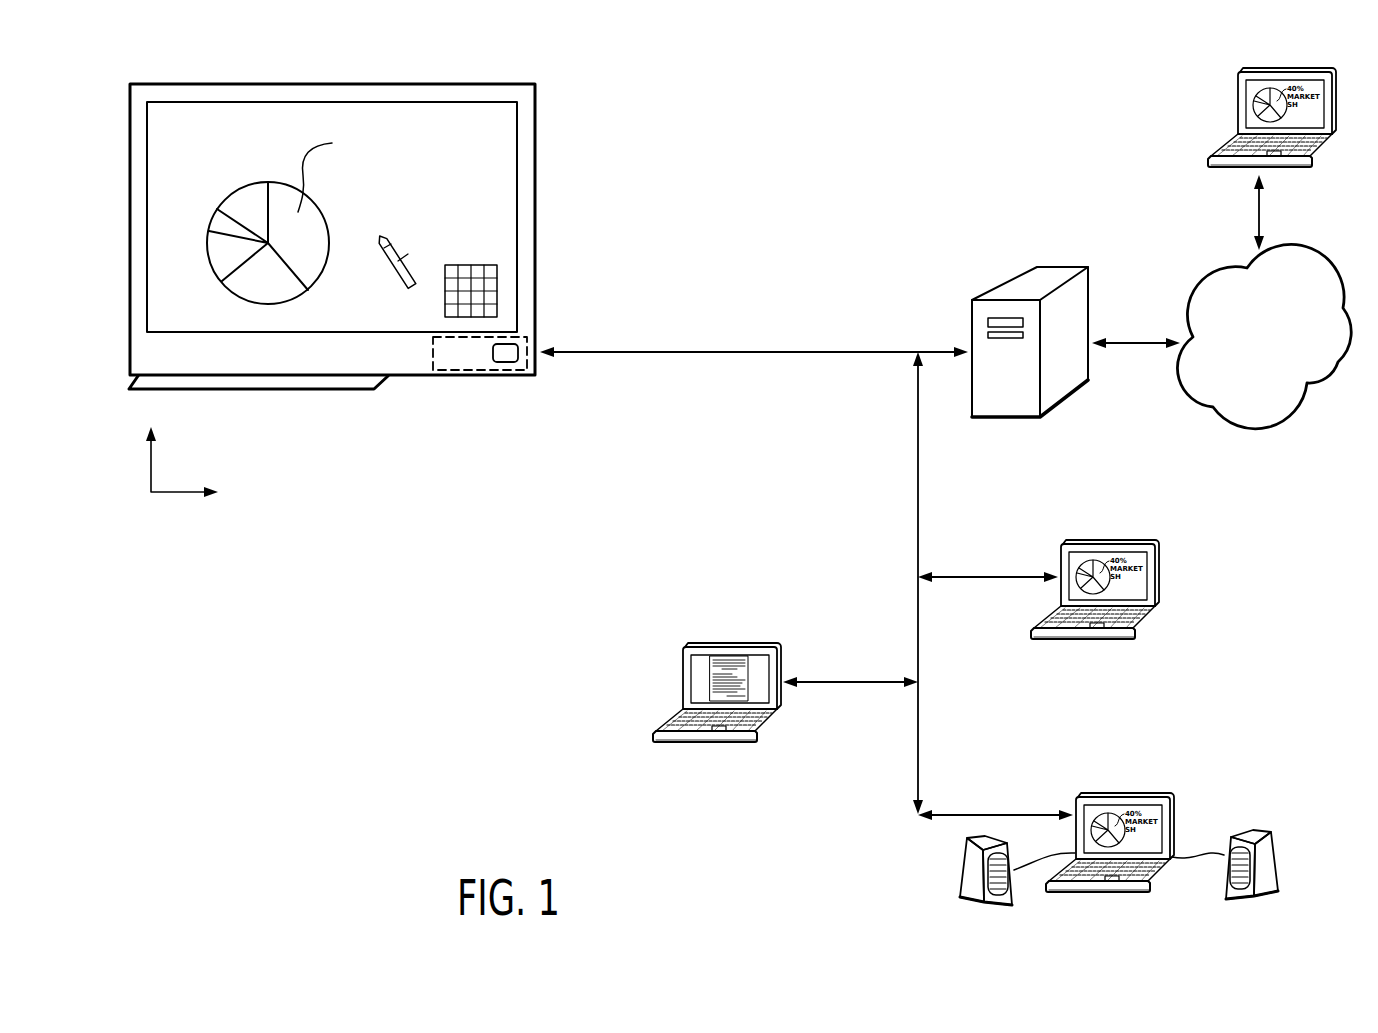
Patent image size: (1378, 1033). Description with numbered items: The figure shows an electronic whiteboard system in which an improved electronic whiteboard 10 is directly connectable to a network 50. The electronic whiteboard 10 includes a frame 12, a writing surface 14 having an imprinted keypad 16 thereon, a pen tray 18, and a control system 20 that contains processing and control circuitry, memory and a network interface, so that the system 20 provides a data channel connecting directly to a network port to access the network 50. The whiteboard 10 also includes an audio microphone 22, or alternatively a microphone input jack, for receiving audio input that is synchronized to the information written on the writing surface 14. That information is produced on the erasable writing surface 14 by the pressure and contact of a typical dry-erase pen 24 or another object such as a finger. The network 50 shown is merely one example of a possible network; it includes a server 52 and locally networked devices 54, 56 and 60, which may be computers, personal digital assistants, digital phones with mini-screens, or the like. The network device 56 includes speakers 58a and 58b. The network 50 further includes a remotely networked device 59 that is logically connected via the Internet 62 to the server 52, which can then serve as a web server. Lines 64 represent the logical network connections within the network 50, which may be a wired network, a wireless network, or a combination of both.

The electronic whiteboard 10 is at (478, 55).
The frame 12 is at (527, 190).
The writing surface 14 is at (200, 170).
The imprinted keypad 16 is at (450, 265).
The pen tray 18 is at (243, 390).
The control system 20 is at (425, 360).
The audio microphone 22 is at (510, 362).
The dry-erase pen 24 is at (403, 260).
The network 50 is at (878, 205).
The server 52 is at (1080, 303).
The locally networked device 54 is at (1160, 570).
The locally networked device 56 is at (1173, 815).
The speaker 58a is at (960, 872).
The speaker 58b is at (1265, 860).
The remotely networked device 59 is at (1233, 91).
The locally networked device 60 is at (680, 673).
The Internet 62 is at (1277, 374).
The lines 64 is at (842, 351).